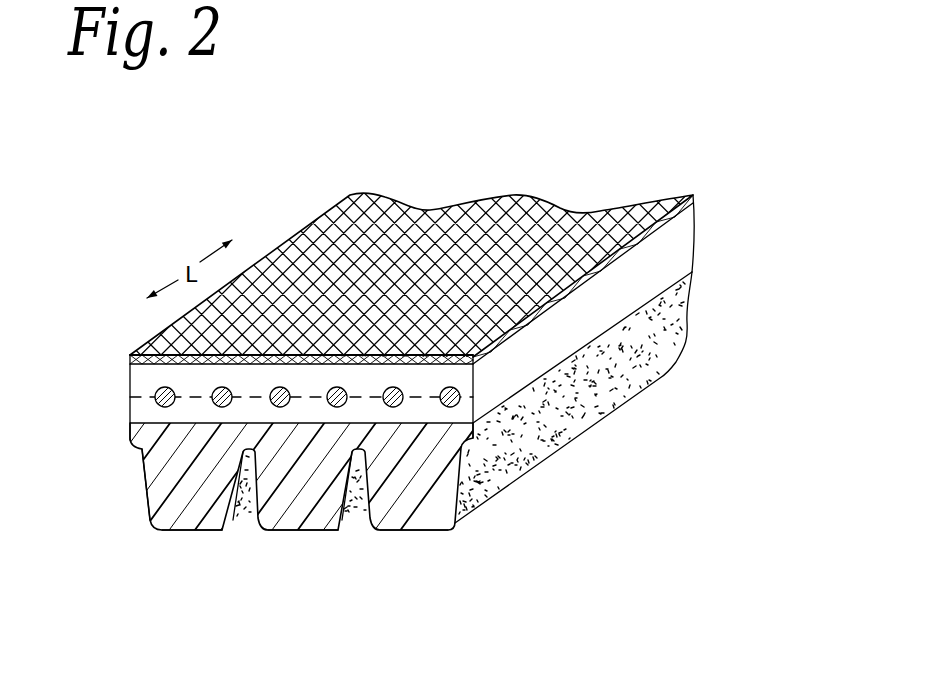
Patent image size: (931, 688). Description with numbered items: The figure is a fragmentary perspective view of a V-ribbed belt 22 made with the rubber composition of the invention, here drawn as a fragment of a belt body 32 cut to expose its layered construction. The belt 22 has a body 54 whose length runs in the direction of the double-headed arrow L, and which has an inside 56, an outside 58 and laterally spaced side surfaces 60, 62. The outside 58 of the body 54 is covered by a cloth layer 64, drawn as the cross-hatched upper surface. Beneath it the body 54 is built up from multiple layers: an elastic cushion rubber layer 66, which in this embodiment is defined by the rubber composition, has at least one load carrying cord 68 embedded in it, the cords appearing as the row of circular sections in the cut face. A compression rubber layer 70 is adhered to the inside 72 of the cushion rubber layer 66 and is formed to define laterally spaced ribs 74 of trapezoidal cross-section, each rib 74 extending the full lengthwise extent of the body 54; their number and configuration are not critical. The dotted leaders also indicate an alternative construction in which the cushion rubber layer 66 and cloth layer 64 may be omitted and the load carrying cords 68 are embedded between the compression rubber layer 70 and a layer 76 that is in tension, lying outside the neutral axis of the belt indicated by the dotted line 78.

The V-ribbed belt 22 is at (257, 184).
The belt body 32 is at (471, 0).
The body 54 is at (683, 251).
The inside 56 is at (398, 540).
The outside 58 is at (362, 358).
The side surface 60 is at (517, 363).
The side surface 62 is at (130, 412).
The cloth layer 64 is at (548, 221).
The cushion rubber layer 66 is at (270, 407).
The load carrying cord 68 is at (215, 392).
The compression rubber layer 70 is at (280, 531).
The inside of the cushion rubber layer 72 is at (134, 492).
The rib 74 is at (162, 531).
The layer in tension 76 is at (255, 372).
The dotted line 78 is at (320, 393).